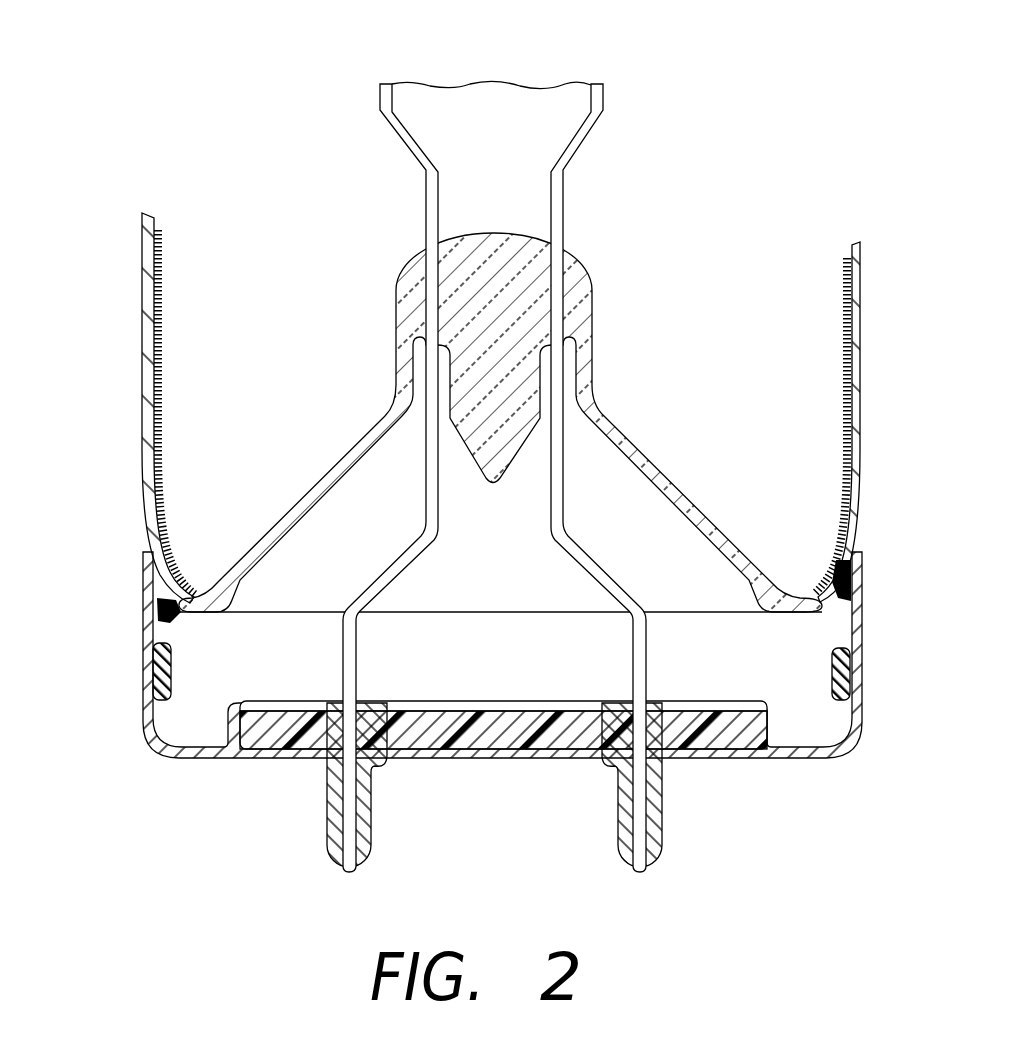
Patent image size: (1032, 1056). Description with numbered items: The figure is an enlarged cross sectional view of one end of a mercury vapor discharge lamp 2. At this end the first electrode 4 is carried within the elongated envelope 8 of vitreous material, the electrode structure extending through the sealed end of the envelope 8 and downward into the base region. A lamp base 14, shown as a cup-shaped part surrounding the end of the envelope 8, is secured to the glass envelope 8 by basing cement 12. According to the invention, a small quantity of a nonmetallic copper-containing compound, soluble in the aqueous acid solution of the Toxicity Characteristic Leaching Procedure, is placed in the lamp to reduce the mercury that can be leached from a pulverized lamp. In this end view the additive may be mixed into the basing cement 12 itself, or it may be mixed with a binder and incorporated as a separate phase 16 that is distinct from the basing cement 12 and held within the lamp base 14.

The mercury vapor discharge lamp 2 is at (502, 449).
The first electrode 4 is at (384, 152).
The envelope 8 is at (858, 276).
The basing cement 12 is at (166, 603).
The lamp base 14 is at (145, 719).
The separate phase 16 is at (164, 666).